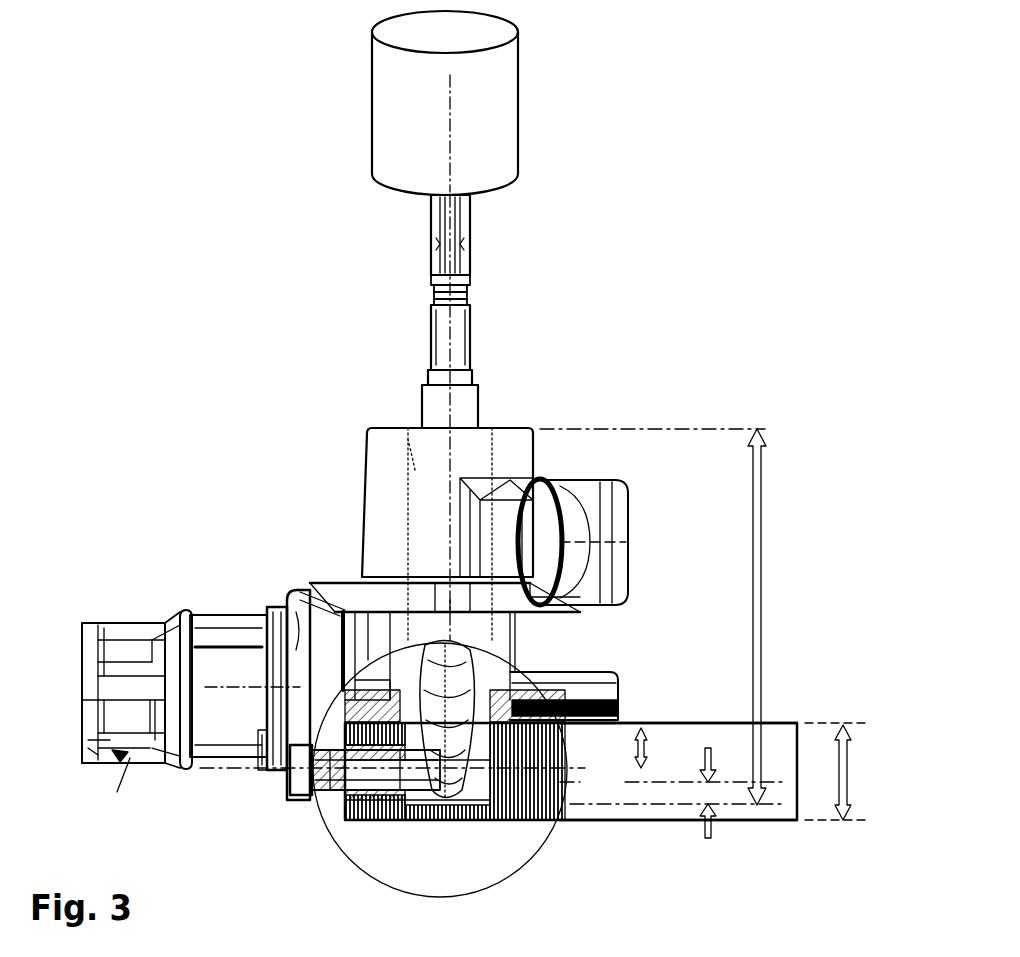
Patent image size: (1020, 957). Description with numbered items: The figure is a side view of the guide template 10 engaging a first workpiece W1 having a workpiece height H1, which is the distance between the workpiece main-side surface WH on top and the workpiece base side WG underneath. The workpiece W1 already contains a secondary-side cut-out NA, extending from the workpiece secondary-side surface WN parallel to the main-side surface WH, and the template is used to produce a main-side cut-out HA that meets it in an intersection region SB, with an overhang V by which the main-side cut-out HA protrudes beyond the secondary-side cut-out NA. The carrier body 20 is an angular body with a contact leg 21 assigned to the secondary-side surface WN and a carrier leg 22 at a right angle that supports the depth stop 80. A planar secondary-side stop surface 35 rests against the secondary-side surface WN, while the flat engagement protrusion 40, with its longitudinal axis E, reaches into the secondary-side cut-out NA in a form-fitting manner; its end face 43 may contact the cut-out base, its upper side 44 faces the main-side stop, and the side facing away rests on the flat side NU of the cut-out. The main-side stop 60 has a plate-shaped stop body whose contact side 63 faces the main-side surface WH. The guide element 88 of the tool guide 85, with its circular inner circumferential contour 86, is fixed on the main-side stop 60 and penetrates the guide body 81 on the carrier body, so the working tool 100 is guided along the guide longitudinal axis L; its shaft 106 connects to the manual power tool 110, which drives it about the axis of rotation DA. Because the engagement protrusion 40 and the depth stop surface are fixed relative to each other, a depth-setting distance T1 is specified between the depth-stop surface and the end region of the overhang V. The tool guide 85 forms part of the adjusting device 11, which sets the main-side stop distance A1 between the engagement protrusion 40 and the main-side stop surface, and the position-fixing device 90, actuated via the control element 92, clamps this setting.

The guide template 10 is at (720, 273).
The adjusting device 11 is at (547, 475).
The carrier body 20 is at (262, 582).
The contact leg 21 is at (293, 782).
The carrier leg 22 is at (343, 583).
The secondary-side stop surface 35 is at (352, 585).
The engagement protrusion 40 is at (528, 830).
The end face 43 is at (672, 784).
The upper side 44 is at (375, 822).
The main-side stop 60 is at (596, 683).
The contact side 63 is at (612, 735).
The depth stop 80 is at (503, 418).
The guide body 81 is at (518, 423).
The tool guide 85 is at (398, 455).
The inner circumferential contour 86 is at (412, 472).
The guide element 88 is at (500, 642).
The position-fixing device 90 is at (621, 477).
The control element 92 is at (615, 520).
The working tool 100 is at (474, 340).
The shaft 106 is at (468, 242).
The manual power tool 110 is at (522, 85).
The axis of rotation DA is at (452, 150).
The guide longitudinal axis L is at (450, 405).
The longitudinal axis of the engagement protrusion E is at (216, 770).
The depth-setting distance T1 is at (787, 617).
The workpiece W1 is at (797, 721).
The workpiece height H1 is at (850, 768).
The main-side stop distance A1 is at (648, 745).
The main-side cut-out HA is at (565, 752).
The overhang V is at (725, 800).
The workpiece base side WG is at (765, 822).
The workpiece main-side surface WH is at (692, 722).
The flat side of the secondary-side cut-out NU is at (320, 806).
The workpiece secondary-side surface WN is at (345, 812).
The secondary-side cut-out NA is at (397, 822).
The intersection region SB is at (466, 825).